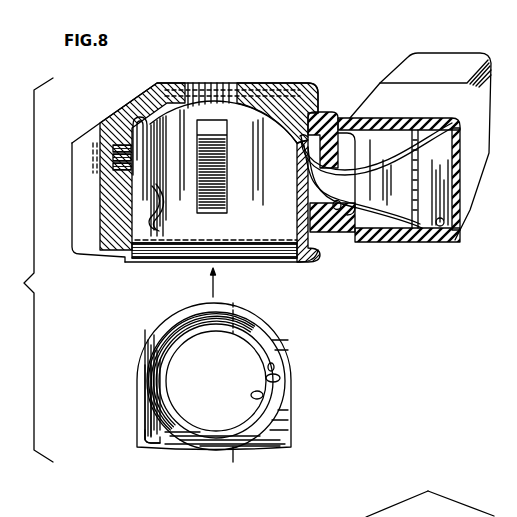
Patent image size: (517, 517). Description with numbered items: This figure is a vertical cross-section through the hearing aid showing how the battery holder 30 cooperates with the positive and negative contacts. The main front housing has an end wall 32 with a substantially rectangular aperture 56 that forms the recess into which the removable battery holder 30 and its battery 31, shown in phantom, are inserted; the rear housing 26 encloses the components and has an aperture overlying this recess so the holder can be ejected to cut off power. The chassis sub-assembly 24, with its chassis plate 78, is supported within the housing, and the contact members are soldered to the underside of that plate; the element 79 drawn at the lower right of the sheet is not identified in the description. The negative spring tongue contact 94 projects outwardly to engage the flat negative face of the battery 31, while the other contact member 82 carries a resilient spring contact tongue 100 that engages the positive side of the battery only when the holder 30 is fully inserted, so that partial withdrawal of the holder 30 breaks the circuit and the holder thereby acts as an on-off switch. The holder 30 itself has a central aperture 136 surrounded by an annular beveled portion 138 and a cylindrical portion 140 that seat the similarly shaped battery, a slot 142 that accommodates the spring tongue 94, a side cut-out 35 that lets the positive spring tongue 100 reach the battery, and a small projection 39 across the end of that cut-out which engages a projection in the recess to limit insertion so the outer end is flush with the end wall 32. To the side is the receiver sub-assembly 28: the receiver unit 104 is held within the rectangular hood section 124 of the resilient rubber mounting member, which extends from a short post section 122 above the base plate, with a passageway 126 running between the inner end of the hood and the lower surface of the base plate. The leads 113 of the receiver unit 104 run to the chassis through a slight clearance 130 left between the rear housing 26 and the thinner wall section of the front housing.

The chassis sub-assembly 24 is at (88, 254).
The rear housing member 26 is at (279, 78).
The receiver sub-assembly 28 is at (477, 207).
The battery holder 30 is at (296, 424).
The battery 31 is at (275, 367).
The end wall 32 is at (287, 256).
The cut-out 35 is at (150, 424).
The small projection 39 is at (148, 440).
The rectangular aperture 56 is at (157, 259).
The chassis plate 78 is at (468, 512).
The roof line 79 is at (366, 516).
The contact member 82 is at (157, 186).
The spring tongue contact 94 is at (224, 167).
The resilient spring contact tongue 100 is at (148, 190).
The receiver unit 104 is at (387, 216).
The leads 113 is at (380, 197).
The post section 122 is at (332, 234).
The hood section 124 is at (458, 236).
The passageway 126 is at (334, 231).
The clearance 130 is at (293, 140).
The central aperture 136 is at (263, 397).
The annular beveled portion 138 is at (230, 430).
The cylindrical portion 140 is at (283, 379).
The slot 142 is at (234, 332).